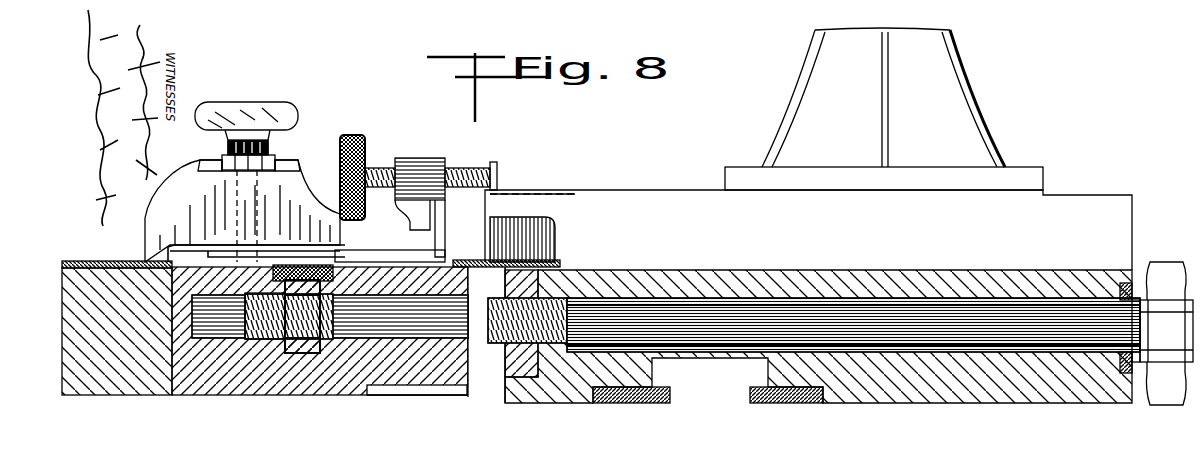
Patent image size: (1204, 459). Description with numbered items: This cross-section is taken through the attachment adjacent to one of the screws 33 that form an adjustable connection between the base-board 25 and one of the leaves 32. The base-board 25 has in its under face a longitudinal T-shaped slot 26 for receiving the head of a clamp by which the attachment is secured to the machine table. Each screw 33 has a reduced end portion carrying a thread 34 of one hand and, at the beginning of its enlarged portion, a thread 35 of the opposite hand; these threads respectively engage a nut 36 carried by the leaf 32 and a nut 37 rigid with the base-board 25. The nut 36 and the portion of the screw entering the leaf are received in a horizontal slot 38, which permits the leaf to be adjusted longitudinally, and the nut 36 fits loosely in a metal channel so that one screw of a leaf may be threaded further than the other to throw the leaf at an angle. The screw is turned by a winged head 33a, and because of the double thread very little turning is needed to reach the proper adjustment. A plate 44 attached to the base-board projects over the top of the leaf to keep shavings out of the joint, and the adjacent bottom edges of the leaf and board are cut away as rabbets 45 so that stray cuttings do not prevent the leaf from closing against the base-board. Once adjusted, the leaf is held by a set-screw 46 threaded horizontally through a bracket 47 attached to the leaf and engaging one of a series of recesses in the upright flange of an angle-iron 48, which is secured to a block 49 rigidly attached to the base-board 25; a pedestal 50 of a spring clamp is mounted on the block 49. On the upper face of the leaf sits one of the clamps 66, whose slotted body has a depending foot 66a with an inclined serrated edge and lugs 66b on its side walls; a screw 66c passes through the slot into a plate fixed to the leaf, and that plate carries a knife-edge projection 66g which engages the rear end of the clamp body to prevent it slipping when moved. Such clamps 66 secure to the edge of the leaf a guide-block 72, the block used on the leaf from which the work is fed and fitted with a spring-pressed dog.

The base-board 25 is at (806, 271).
The longitudinal T-shaped slot 26 is at (680, 372).
The leaf 32 is at (200, 378).
The screw 33 is at (593, 341).
The winged head 33a is at (1161, 266).
The thread of one hand 34 is at (275, 358).
The thread of the opposite hand 35 is at (548, 282).
The nut 36 is at (305, 355).
The nut 37 is at (546, 268).
The horizontal slot 38 is at (217, 290).
The plate 44 is at (536, 260).
The rabbet 45 is at (505, 401).
The set-screw 46 is at (380, 170).
The bracket 47 is at (425, 166).
The angle-iron 48 is at (498, 173).
The block 49 is at (1062, 195).
The pedestal 50 is at (955, 125).
The clamp 66 is at (268, 260).
The foot 66a is at (283, 187).
The lug 66b is at (206, 162).
The screw 66c is at (236, 114).
The knife-edge projection 66g is at (397, 262).
The guide-block 72 is at (122, 372).